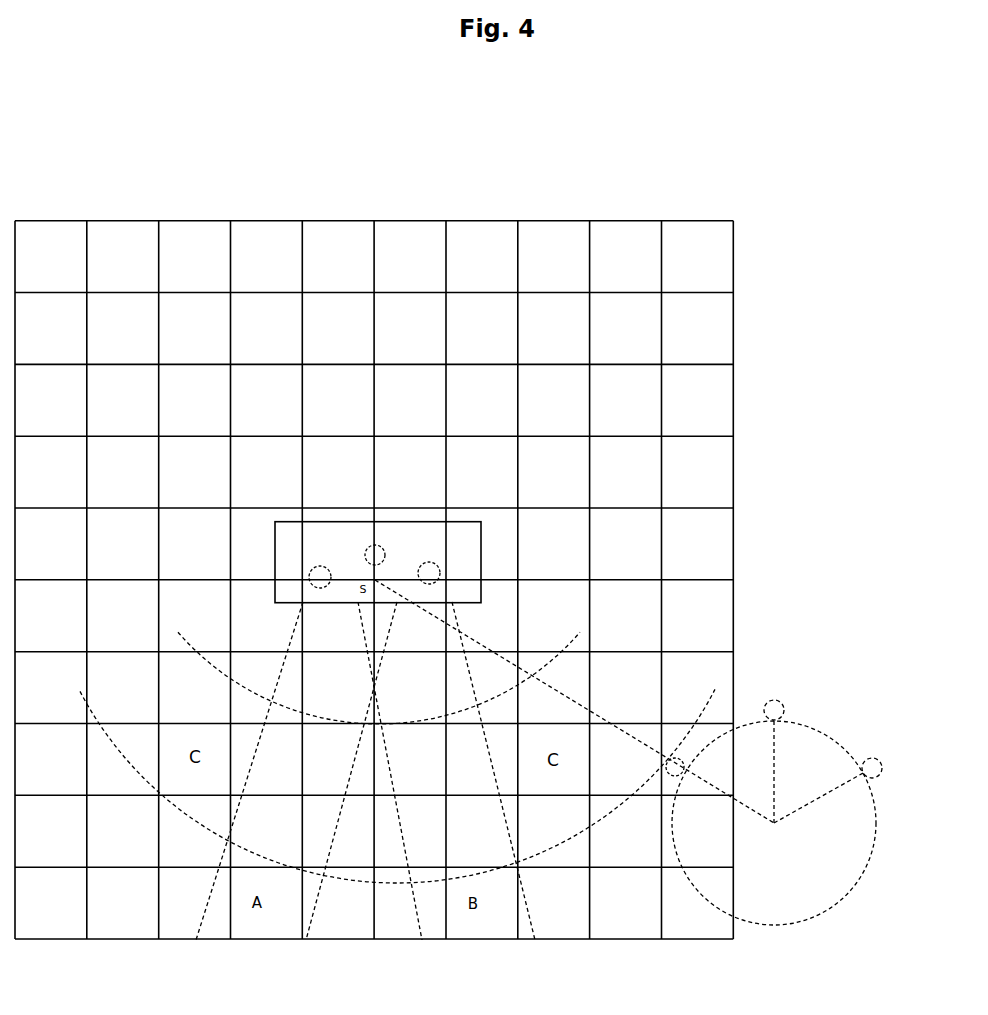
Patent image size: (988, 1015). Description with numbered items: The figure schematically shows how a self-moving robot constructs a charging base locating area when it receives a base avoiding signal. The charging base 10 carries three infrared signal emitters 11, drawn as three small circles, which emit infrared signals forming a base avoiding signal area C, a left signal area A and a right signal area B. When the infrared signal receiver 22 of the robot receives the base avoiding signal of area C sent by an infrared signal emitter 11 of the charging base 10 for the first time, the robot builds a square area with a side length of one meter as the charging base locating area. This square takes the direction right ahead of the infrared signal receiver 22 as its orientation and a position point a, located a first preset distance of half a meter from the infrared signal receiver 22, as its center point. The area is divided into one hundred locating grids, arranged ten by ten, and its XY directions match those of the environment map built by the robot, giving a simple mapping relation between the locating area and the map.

The charging base 10 is at (410, 535).
The infrared signal emitter 11 is at (367, 550).
The infrared signal receiver 22 is at (670, 778).